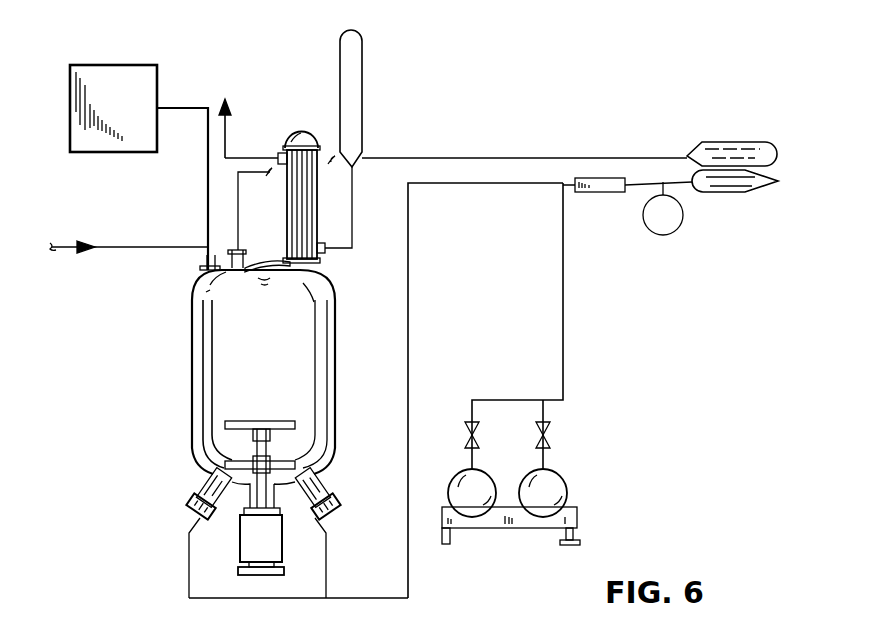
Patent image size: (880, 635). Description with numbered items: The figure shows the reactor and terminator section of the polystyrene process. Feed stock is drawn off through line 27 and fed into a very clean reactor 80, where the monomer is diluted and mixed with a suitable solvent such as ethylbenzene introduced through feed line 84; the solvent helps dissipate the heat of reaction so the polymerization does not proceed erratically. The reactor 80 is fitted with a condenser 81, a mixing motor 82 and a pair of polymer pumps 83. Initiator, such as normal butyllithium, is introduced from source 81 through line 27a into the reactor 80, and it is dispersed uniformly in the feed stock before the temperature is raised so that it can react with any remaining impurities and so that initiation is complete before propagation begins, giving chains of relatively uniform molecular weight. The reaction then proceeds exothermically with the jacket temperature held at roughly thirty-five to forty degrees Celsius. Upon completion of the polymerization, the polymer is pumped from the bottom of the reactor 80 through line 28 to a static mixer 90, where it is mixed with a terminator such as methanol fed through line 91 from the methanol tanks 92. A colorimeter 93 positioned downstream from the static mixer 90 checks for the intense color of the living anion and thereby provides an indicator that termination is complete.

The line 27 is at (165, 246).
The line 27a is at (208, 196).
The line 28 is at (408, 275).
The reactor 80 is at (345, 353).
The condenser 81 is at (157, 96).
The mixing motor 82 is at (272, 548).
The polymer pumps 83 is at (188, 507).
The feed line 84 is at (450, 157).
The static mixer 90 is at (596, 194).
The line 91 is at (563, 265).
The methanol tanks 92 is at (536, 472).
The colorimeter 93 is at (672, 224).